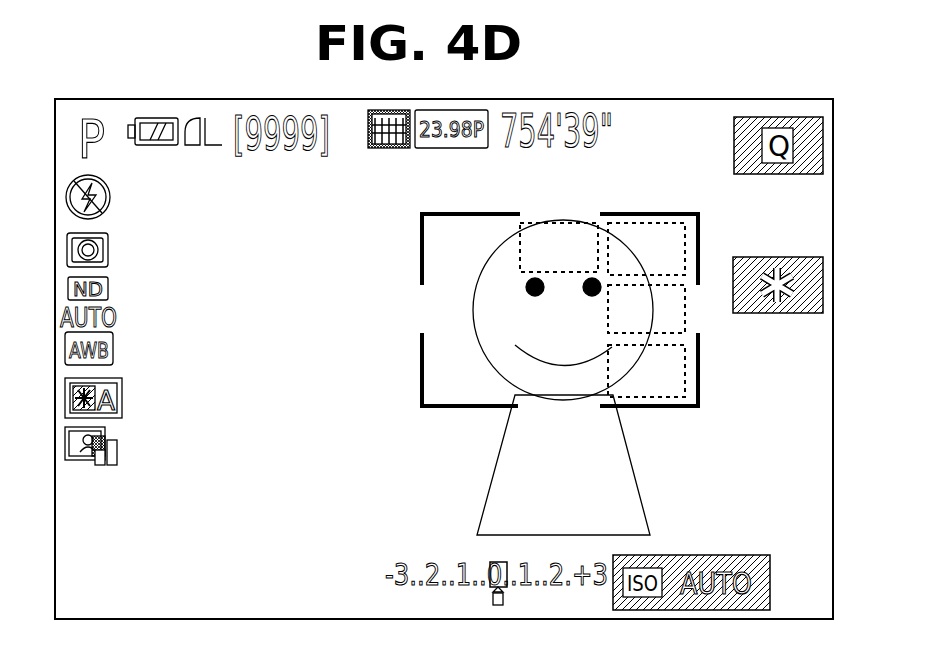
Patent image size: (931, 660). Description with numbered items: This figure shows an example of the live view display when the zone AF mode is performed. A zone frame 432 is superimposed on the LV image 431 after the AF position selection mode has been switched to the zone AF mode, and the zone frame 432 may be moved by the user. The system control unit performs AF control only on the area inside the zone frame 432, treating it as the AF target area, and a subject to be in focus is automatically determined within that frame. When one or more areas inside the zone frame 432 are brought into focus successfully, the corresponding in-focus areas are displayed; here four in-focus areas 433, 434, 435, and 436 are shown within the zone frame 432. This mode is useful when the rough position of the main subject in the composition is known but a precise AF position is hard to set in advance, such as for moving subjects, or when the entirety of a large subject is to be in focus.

The LV image 431 is at (716, 99).
The zone frame 432 is at (420, 248).
The in-focus area 433 is at (539, 222).
The in-focus area 434 is at (641, 222).
The in-focus area 435 is at (687, 308).
The in-focus area 436 is at (687, 385).